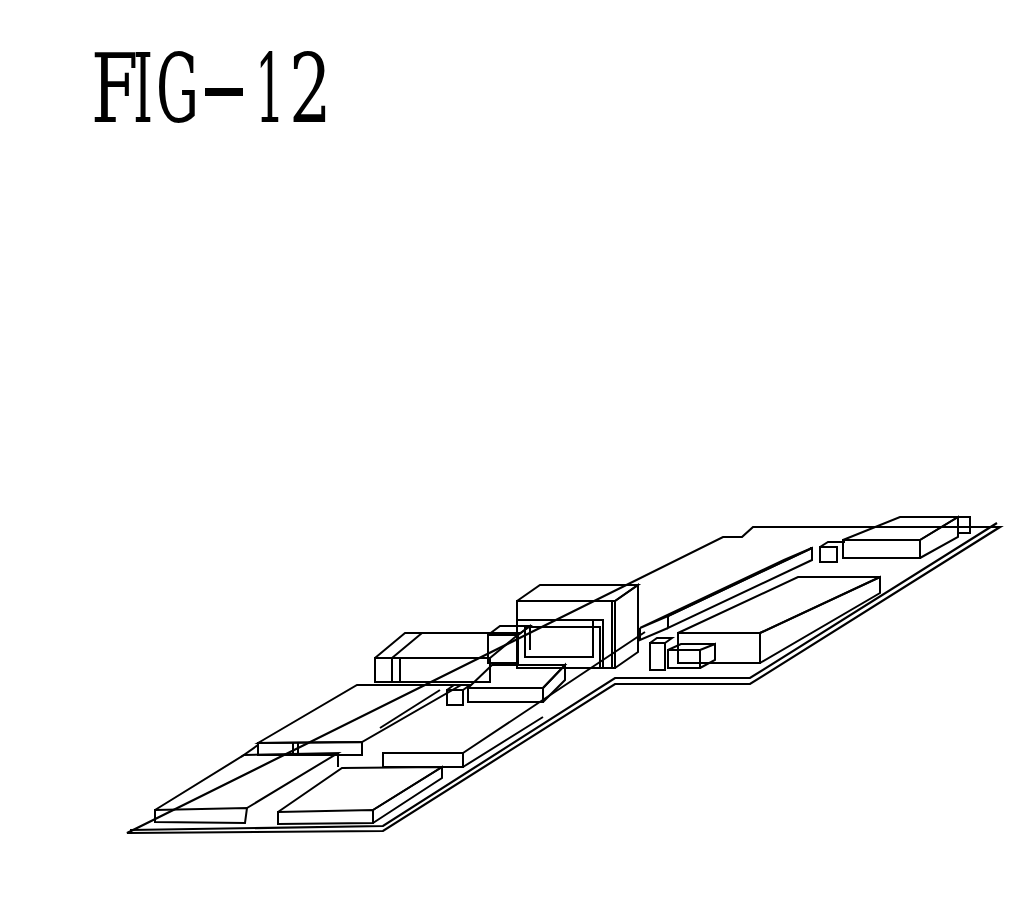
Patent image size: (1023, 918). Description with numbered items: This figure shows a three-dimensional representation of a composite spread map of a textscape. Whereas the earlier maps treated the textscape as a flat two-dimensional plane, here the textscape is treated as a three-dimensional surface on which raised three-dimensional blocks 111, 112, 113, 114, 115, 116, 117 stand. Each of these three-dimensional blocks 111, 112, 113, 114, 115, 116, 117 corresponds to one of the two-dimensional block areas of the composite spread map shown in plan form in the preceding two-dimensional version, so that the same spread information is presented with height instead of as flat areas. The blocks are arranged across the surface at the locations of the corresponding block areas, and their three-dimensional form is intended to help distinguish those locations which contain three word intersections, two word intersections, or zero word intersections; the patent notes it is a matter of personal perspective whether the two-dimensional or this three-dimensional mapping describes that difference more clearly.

The three-dimensional block 111 is at (445, 643).
The three-dimensional block 112 is at (657, 600).
The three-dimensional block 113 is at (522, 676).
The three-dimensional block 114 is at (908, 522).
The three-dimensional block 115 is at (762, 612).
The three-dimensional block 116 is at (583, 602).
The three-dimensional block 117 is at (510, 635).